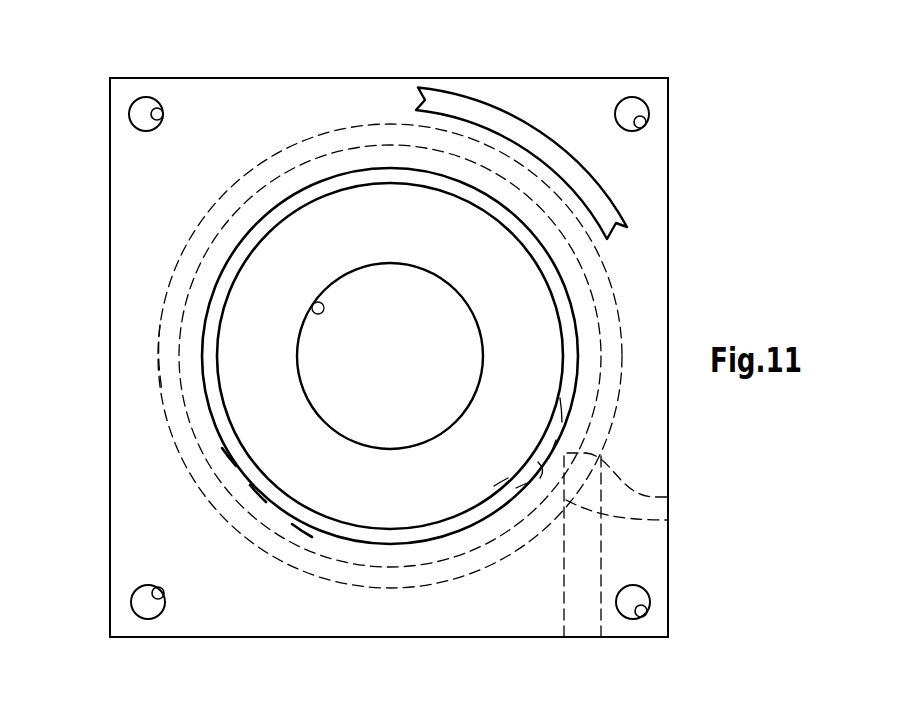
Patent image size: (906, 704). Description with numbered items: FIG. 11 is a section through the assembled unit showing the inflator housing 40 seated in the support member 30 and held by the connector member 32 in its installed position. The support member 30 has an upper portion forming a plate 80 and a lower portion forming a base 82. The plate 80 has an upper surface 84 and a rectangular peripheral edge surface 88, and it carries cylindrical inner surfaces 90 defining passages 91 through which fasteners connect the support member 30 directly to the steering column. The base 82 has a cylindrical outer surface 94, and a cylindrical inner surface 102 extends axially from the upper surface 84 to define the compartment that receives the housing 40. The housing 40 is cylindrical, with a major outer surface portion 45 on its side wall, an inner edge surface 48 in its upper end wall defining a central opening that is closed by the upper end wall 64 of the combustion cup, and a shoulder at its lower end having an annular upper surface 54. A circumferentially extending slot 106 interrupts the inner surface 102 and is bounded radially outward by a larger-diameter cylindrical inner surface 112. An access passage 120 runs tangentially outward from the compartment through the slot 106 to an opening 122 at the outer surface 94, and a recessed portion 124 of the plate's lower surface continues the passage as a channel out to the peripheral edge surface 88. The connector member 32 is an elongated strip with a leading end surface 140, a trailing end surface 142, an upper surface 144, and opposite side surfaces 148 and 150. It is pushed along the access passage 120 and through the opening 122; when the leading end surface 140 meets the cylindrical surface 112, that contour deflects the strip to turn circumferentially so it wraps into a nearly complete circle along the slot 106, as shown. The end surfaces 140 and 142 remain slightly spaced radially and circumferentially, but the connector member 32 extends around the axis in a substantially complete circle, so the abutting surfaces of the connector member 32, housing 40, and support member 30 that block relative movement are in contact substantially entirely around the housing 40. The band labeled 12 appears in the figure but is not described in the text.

The rotor direction band 12 is at (512, 128).
The support member 30 is at (178, 76).
The connector member 32 is at (557, 292).
The housing 40 is at (297, 206).
The major outer surface portion 45 is at (500, 490).
The inner edge surface 48 is at (313, 312).
The annular upper surface 54 is at (558, 448).
The upper end wall 64 is at (327, 380).
The plate 80 is at (138, 160).
The base 82 is at (145, 333).
The upper surface 84 is at (138, 208).
The peripheral edge surface 88 is at (110, 274).
The cylindrical inner surfaces 90 is at (164, 113).
The passages 91 is at (135, 111).
The cylindrical outer surface 94 is at (157, 383).
The cylindrical inner surface 102 is at (228, 453).
The slot 106 is at (302, 530).
The cylindrical inner surface 112 is at (258, 497).
The access passage 120 is at (578, 632).
The opening 122 is at (668, 520).
The recessed portion 124 is at (601, 622).
The leading end surface 140 is at (545, 468).
The trailing end surface 142 is at (668, 497).
The upper surface 144 is at (522, 492).
The side surface 148 is at (562, 410).
The side surface 150 is at (600, 383).